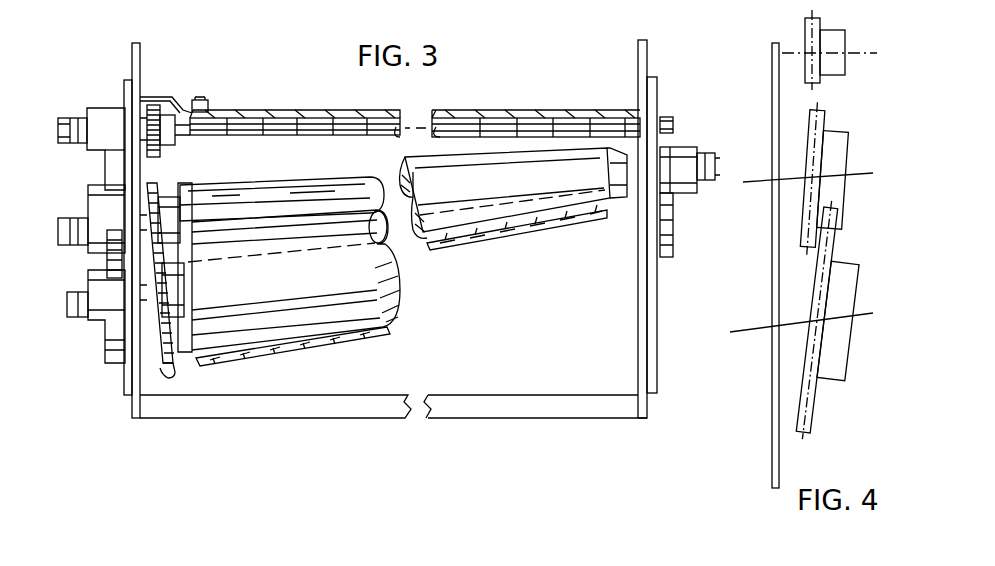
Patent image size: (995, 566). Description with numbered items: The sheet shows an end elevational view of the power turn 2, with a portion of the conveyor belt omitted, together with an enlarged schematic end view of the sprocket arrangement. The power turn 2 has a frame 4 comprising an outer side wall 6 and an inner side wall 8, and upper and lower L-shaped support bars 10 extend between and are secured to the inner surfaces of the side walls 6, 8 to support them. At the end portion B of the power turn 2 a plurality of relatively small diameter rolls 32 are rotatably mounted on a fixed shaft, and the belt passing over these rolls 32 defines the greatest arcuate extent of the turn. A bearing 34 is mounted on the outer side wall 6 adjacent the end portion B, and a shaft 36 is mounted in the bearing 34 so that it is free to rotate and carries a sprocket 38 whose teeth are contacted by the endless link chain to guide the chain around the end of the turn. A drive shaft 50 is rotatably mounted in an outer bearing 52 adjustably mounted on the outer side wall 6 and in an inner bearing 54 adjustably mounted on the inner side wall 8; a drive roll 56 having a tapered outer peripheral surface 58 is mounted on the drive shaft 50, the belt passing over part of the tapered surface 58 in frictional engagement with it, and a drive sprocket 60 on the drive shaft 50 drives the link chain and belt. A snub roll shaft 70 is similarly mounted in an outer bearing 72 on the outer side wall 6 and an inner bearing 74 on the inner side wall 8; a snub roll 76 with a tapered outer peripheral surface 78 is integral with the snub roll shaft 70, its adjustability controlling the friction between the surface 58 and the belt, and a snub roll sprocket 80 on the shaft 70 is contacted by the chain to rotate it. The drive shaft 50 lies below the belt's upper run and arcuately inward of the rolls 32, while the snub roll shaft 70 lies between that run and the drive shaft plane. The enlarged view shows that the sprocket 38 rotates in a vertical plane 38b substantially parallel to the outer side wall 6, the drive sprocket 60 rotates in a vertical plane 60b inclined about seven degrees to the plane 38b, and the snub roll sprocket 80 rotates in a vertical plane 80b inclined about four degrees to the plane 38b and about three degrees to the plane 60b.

In FIG. 3, the power turn 2 is at (664, 419).
In FIG. 3, the frame 4 is at (240, 472).
In FIG. 3, the outer side wall 6 is at (131, 416).
In FIG. 4, the outer side wall 6 is at (772, 350).
In FIG. 3, the inner side wall 8 is at (643, 338).
In FIG. 3, the L-shaped support bars 10 is at (630, 118).
In FIG. 3, the rolls 32 is at (320, 128).
In FIG. 3, the bearing 34 is at (113, 108).
In FIG. 3, the shaft 36 is at (148, 118).
In FIG. 3, the sprocket 38 is at (166, 113).
In FIG. 4, the sprocket 38 is at (820, 28).
In FIG. 4, the vertical plane 38b is at (776, 17).
In FIG. 3, the drive shaft 50 is at (615, 190).
In FIG. 3, the outer bearing 52 is at (100, 318).
In FIG. 3, the inner bearing 54 is at (678, 196).
In FIG. 3, the drive roll 56 is at (185, 355).
In FIG. 3, the tapered outer peripheral surface 58 is at (289, 267).
In FIG. 3, the drive sprocket 60 is at (170, 376).
In FIG. 4, the drive sprocket 60 is at (830, 420).
In FIG. 4, the vertical plane 60b is at (858, 252).
In FIG. 3, the snub roll shaft 70 is at (640, 145).
In FIG. 3, the outer bearing 72 is at (95, 242).
In FIG. 3, the inner bearing 74 is at (680, 150).
In FIG. 3, the snub roll 76 is at (608, 140).
In FIG. 3, the tapered outer peripheral surface 78 is at (282, 199).
In FIG. 3, the snub roll sprocket 80 is at (157, 185).
In FIG. 4, the snub roll sprocket 80 is at (822, 122).
In FIG. 4, the vertical plane 80b is at (771, 152).
In FIG. 3, the end portion B is at (651, 28).